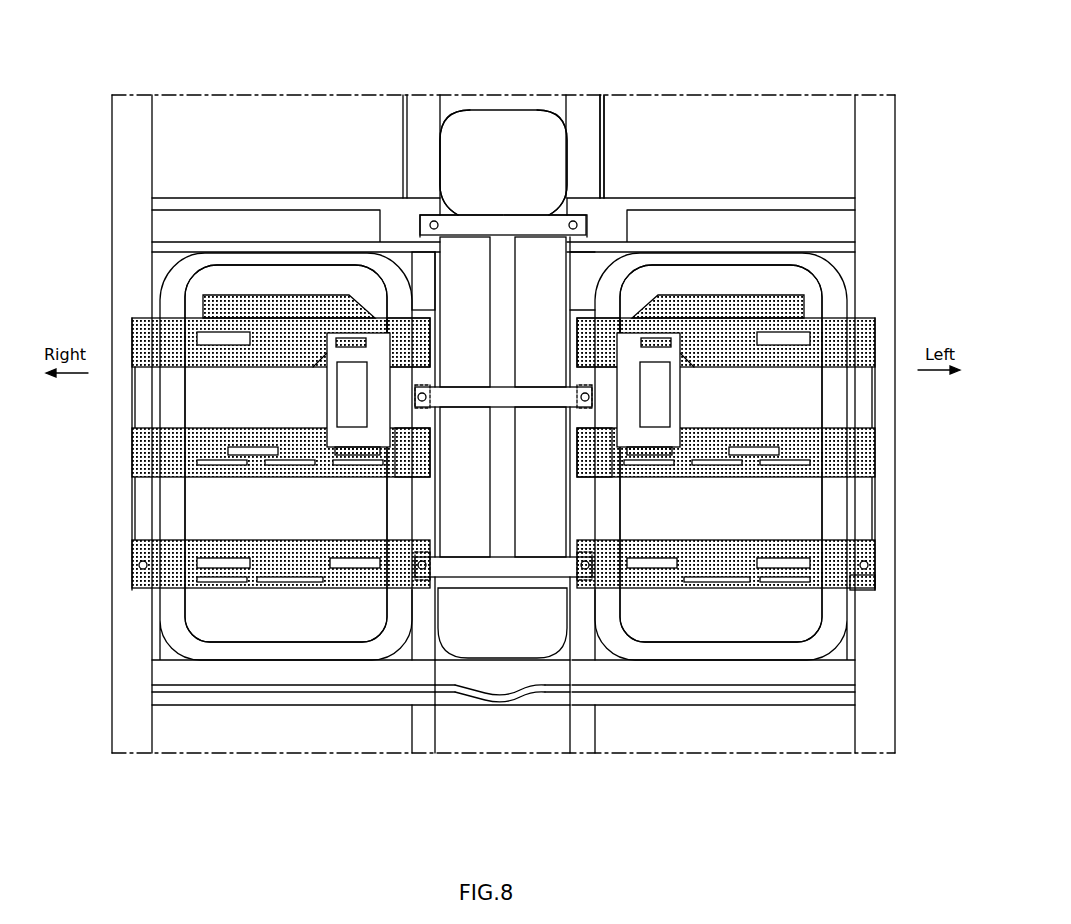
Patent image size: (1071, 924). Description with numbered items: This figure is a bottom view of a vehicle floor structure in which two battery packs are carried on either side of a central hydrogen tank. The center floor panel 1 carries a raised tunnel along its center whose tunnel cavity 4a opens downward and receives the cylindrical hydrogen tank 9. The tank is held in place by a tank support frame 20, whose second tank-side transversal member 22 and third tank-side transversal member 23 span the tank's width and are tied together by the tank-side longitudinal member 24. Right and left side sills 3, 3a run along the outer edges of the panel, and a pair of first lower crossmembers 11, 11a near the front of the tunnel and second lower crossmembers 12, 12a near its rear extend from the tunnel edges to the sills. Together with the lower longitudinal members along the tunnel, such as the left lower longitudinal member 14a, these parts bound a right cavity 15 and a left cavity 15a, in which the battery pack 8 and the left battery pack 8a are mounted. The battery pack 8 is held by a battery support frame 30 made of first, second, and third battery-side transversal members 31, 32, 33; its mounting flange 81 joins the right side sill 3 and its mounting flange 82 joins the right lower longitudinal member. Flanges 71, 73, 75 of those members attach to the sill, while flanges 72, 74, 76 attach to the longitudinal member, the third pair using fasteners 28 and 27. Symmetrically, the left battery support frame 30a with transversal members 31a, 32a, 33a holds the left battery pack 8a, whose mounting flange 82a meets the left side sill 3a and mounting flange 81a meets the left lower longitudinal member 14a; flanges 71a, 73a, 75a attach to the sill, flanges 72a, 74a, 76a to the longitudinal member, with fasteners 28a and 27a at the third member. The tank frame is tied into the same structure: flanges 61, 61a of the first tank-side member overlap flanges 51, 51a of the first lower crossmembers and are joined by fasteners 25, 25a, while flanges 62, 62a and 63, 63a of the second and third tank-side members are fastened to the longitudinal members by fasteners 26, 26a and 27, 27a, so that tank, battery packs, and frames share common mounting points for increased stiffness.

The center floor panel 1 is at (761, 190).
The right side sill 3 is at (125, 648).
The left side sill 3a is at (875, 228).
The tunnel cavity 4a is at (532, 192).
The battery pack 8 is at (198, 388).
The left battery pack 8a is at (840, 400).
The hydrogen tank 9 is at (494, 130).
The right first lower crossmember 11 is at (246, 230).
The left first lower crossmember 11a is at (777, 223).
The right second lower crossmember 12 is at (240, 677).
The left second lower crossmember 12a is at (740, 677).
The left lower longitudinal member 14a is at (630, 305).
The right cavity 15 is at (170, 263).
The left cavity 15a is at (838, 263).
The tank support frame 20 is at (497, 212).
The second tank-side transversal member 22 is at (545, 402).
The third tank-side transversal member 23 is at (532, 578).
The tank-side longitudinal member 24 is at (508, 498).
The right fastener 25 is at (468, 180).
The left fastener 25a is at (560, 217).
The right fastener 26 is at (425, 391).
The left fastener 26a is at (583, 270).
The right fastener 27 is at (421, 588).
The left fastener 27a is at (617, 585).
The fastener 28 is at (140, 561).
The fastener 28a is at (867, 561).
The battery support frame 30 is at (112, 433).
The left battery support frame 30a is at (874, 454).
The first battery-side transversal member 31 is at (295, 305).
The first battery-side transversal member 31a is at (713, 305).
The second battery-side transversal member 32 is at (290, 438).
The second battery-side transversal member 32a is at (717, 438).
The third battery-side transversal member 33 is at (257, 555).
The third battery-side transversal member 33a is at (750, 555).
The flange 51 is at (445, 195).
The flange 51a is at (553, 222).
The right flange 61 is at (428, 226).
The left flange 61a is at (574, 225).
The right flange 62 is at (427, 410).
The left flange 62a is at (585, 385).
The right flange 63 is at (418, 560).
The left flange 63a is at (585, 553).
The flange 71 is at (145, 334).
The flange 71a is at (865, 338).
The flange 72 is at (433, 328).
The flange 72a is at (580, 333).
The flange 73 is at (145, 445).
The flange 73a is at (866, 443).
The flange 74 is at (420, 465).
The flange 74a is at (590, 472).
The flange 75 is at (147, 547).
The flange 75a is at (865, 582).
The flange 76 is at (420, 550).
The flange 76a is at (582, 587).
The mounting flange 81 is at (130, 493).
The mounting flange 81a is at (580, 593).
The mounting flange 82 is at (422, 307).
The mounting flange 82a is at (865, 593).